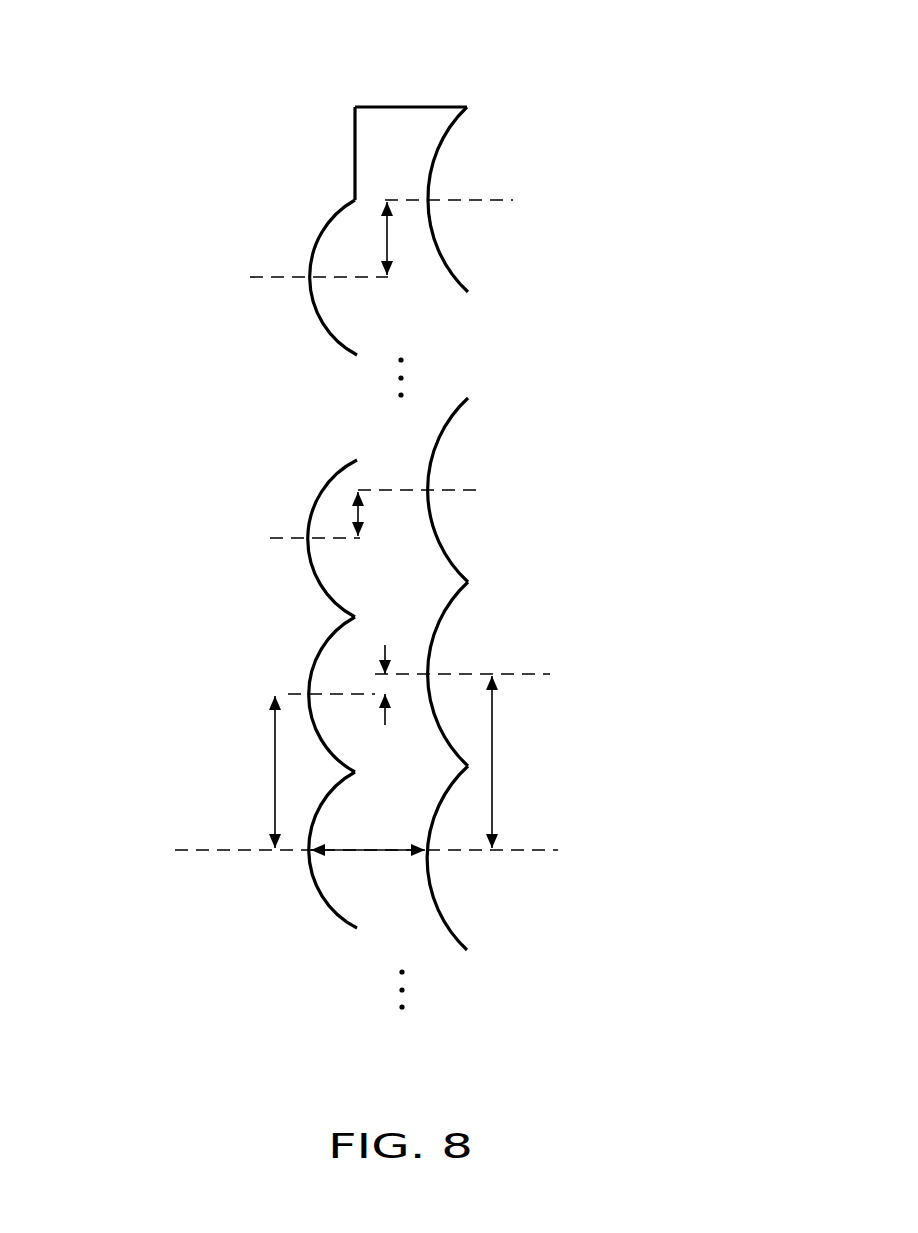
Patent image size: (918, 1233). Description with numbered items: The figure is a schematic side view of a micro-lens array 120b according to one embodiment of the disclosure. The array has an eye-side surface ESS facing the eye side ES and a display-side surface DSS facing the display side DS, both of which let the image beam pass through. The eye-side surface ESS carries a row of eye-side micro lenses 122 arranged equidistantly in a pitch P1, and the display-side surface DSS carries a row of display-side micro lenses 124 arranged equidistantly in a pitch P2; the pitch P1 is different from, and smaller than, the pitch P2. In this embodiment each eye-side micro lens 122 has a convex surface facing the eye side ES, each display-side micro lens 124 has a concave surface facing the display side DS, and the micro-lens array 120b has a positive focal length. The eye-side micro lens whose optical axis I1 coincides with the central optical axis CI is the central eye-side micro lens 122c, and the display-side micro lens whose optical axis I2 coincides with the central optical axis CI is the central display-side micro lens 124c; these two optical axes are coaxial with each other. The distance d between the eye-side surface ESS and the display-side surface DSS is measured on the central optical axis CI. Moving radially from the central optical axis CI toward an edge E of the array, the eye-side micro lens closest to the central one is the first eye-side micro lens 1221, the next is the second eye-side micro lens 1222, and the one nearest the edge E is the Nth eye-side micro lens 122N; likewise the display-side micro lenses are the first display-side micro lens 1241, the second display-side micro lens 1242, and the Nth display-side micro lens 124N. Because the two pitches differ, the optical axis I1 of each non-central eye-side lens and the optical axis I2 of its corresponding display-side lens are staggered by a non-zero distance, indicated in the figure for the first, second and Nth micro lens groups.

The micro-lens array 120b is at (703, 1058).
The eye-side micro lens 122 is at (241, 546).
The Nth eye-side micro lens 122N is at (315, 257).
The second eye-side micro lens 1222 is at (326, 492).
The first eye-side micro lens 1221 is at (337, 640).
The central eye-side micro lens 122c is at (323, 878).
The display-side micro lens 124 is at (529, 574).
The Nth display-side micro lens 124N is at (442, 272).
The second display-side micro lens 1242 is at (443, 420).
The first display-side micro lens 1241 is at (428, 628).
The central display-side micro lens 124c is at (437, 923).
The edge E is at (403, 104).
The eye-side surface ESS is at (336, 204).
The display-side surface DSS is at (448, 143).
The eye side ES is at (155, 42).
The display side DS is at (755, 42).
The optical axis of eye-side micro lens I1 is at (262, 277).
The optical axis of display-side micro lens I2 is at (509, 200).
The central optical axis CI is at (197, 850).
The pitch P1 is at (258, 772).
The pitch P2 is at (511, 762).
The distance d is at (368, 830).